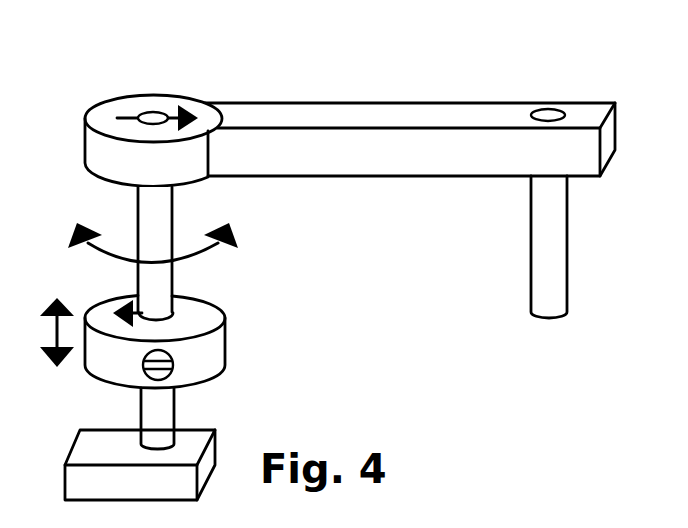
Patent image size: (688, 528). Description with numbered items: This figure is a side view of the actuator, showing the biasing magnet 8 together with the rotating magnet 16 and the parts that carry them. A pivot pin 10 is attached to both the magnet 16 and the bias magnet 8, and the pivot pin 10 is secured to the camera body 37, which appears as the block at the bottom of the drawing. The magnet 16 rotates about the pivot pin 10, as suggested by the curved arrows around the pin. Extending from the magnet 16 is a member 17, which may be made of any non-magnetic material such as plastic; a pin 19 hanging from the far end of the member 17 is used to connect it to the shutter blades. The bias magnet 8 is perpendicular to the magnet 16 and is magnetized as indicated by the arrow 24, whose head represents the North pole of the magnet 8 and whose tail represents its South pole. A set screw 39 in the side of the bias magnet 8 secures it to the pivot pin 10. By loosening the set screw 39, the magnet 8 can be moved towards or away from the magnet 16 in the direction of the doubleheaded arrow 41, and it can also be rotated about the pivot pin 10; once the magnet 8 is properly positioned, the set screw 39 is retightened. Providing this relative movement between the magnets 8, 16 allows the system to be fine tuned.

The bias magnet 8 is at (197, 347).
The pivot pin 10 is at (145, 210).
The magnet 16 is at (100, 112).
The member 17 is at (383, 103).
The pin 19 is at (550, 220).
The arrow 24 is at (190, 312).
The camera body 37 is at (128, 462).
The set screw 39 is at (173, 373).
The doubleheaded arrow 41 is at (53, 330).